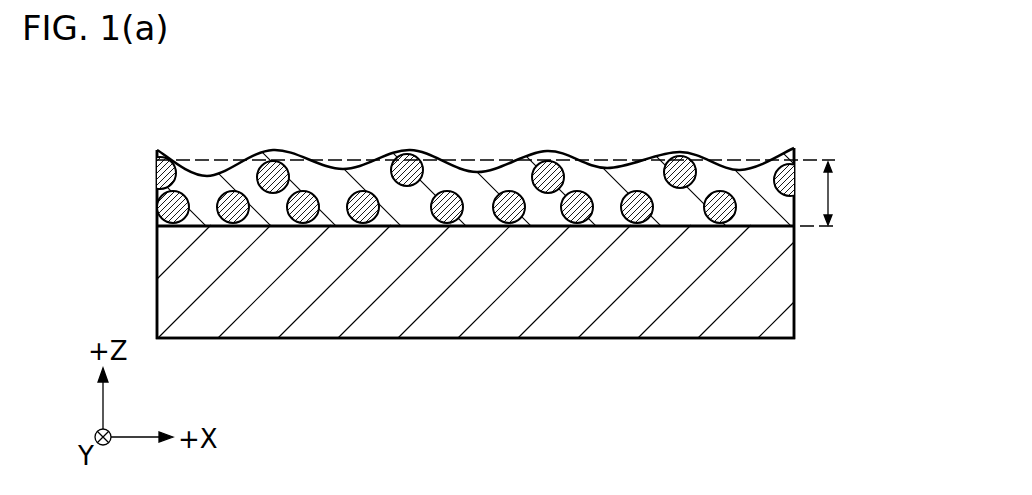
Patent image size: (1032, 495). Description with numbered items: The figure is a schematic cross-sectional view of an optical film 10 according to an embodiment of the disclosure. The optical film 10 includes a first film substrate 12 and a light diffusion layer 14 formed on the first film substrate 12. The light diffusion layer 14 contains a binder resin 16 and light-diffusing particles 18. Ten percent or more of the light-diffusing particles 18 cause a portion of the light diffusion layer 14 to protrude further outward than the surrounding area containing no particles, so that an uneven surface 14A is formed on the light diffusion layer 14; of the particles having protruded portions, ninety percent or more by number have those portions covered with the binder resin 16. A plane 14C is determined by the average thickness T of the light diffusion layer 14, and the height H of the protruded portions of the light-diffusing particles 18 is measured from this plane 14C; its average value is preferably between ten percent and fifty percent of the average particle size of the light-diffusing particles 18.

The optical film 10 is at (817, 108).
The first film substrate 12 is at (778, 272).
The light diffusion layer 14 is at (862, 148).
The uneven surface 14A is at (703, 152).
The plane 14C is at (498, 158).
The binder resin 16 is at (747, 180).
The light-diffusing particles 18 is at (232, 197).